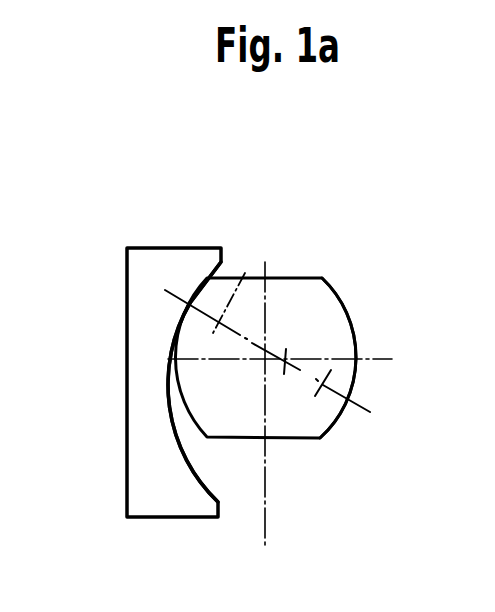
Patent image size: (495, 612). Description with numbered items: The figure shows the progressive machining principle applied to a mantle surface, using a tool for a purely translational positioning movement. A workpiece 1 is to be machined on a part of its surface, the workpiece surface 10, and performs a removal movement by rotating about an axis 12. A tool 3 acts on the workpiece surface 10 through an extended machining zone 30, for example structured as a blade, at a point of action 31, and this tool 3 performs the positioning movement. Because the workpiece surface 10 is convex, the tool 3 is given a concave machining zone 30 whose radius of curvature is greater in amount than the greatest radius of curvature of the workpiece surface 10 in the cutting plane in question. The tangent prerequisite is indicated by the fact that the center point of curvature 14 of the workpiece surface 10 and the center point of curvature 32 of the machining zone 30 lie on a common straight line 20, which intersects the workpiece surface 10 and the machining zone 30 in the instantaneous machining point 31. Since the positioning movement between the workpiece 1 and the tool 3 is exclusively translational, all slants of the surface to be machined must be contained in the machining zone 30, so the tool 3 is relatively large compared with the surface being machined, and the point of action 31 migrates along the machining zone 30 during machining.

The workpiece 1 is at (295, 303).
The tool 3 is at (150, 422).
The workpiece surface 10 is at (338, 420).
The axis 12 is at (267, 537).
The center point of curvature 14 is at (290, 357).
The common straight line 20 is at (245, 273).
The machining zone 30 is at (185, 450).
The point of action 31 is at (190, 303).
The center point of curvature 32 is at (327, 383).